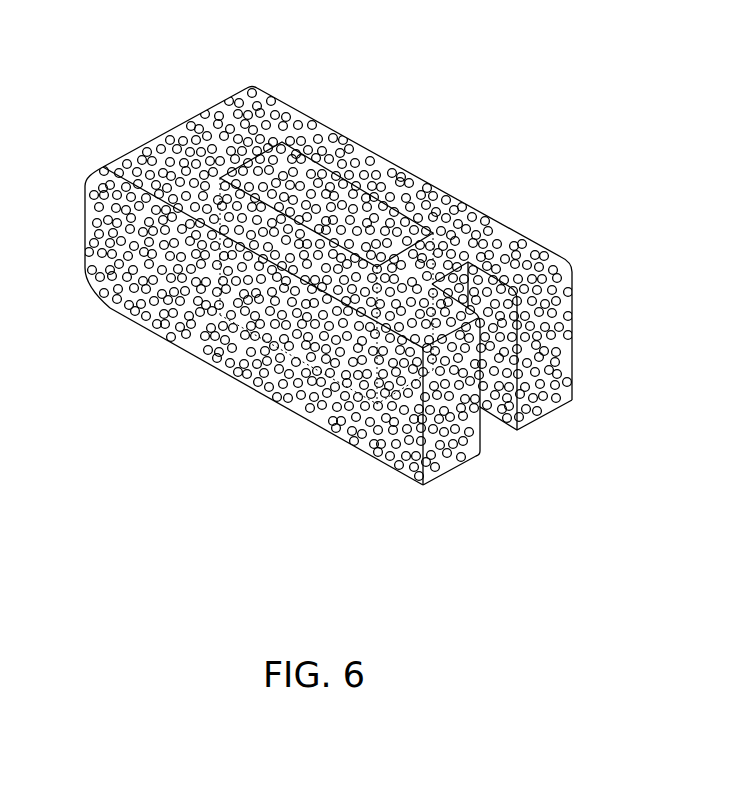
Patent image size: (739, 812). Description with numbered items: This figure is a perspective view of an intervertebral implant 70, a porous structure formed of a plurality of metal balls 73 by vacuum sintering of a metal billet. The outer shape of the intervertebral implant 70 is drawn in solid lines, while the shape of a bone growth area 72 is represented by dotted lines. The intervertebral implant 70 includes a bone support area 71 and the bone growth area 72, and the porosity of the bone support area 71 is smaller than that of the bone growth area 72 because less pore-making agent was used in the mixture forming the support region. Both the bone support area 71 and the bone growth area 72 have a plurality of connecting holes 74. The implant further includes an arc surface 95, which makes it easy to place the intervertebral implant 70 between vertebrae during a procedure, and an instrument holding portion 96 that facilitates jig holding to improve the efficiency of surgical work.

The intervertebral implant 70 is at (157, 102).
The bone support area 71 is at (473, 210).
The bone growth area 72 is at (400, 184).
The metal balls 73 is at (530, 250).
The connecting holes 74 is at (375, 153).
The arc surface 95 is at (97, 287).
The instrument holding portion 96 is at (487, 437).